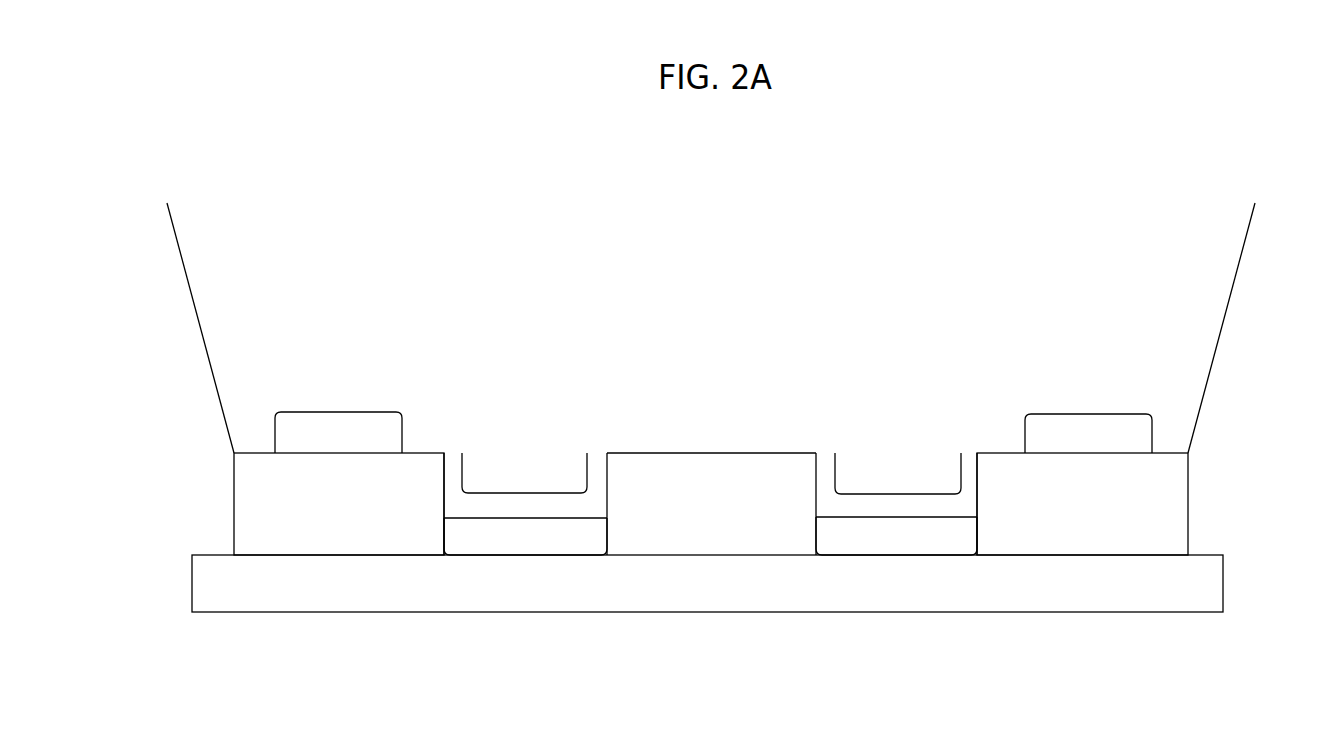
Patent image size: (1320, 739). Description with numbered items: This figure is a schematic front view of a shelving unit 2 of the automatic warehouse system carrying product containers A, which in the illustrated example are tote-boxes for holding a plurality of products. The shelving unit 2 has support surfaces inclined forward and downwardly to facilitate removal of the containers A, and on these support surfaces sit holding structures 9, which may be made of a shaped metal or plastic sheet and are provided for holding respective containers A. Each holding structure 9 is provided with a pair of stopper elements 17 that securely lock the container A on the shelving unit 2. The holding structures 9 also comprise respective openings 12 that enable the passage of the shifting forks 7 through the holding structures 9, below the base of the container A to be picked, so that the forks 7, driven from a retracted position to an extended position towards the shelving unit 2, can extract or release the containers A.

The shelving unit 2 is at (707, 593).
The holding structure 9 is at (228, 500).
The opening 12 is at (450, 474).
The shifting fork 7 is at (522, 460).
The stopper element 17 is at (337, 427).
The product container A is at (1217, 313).